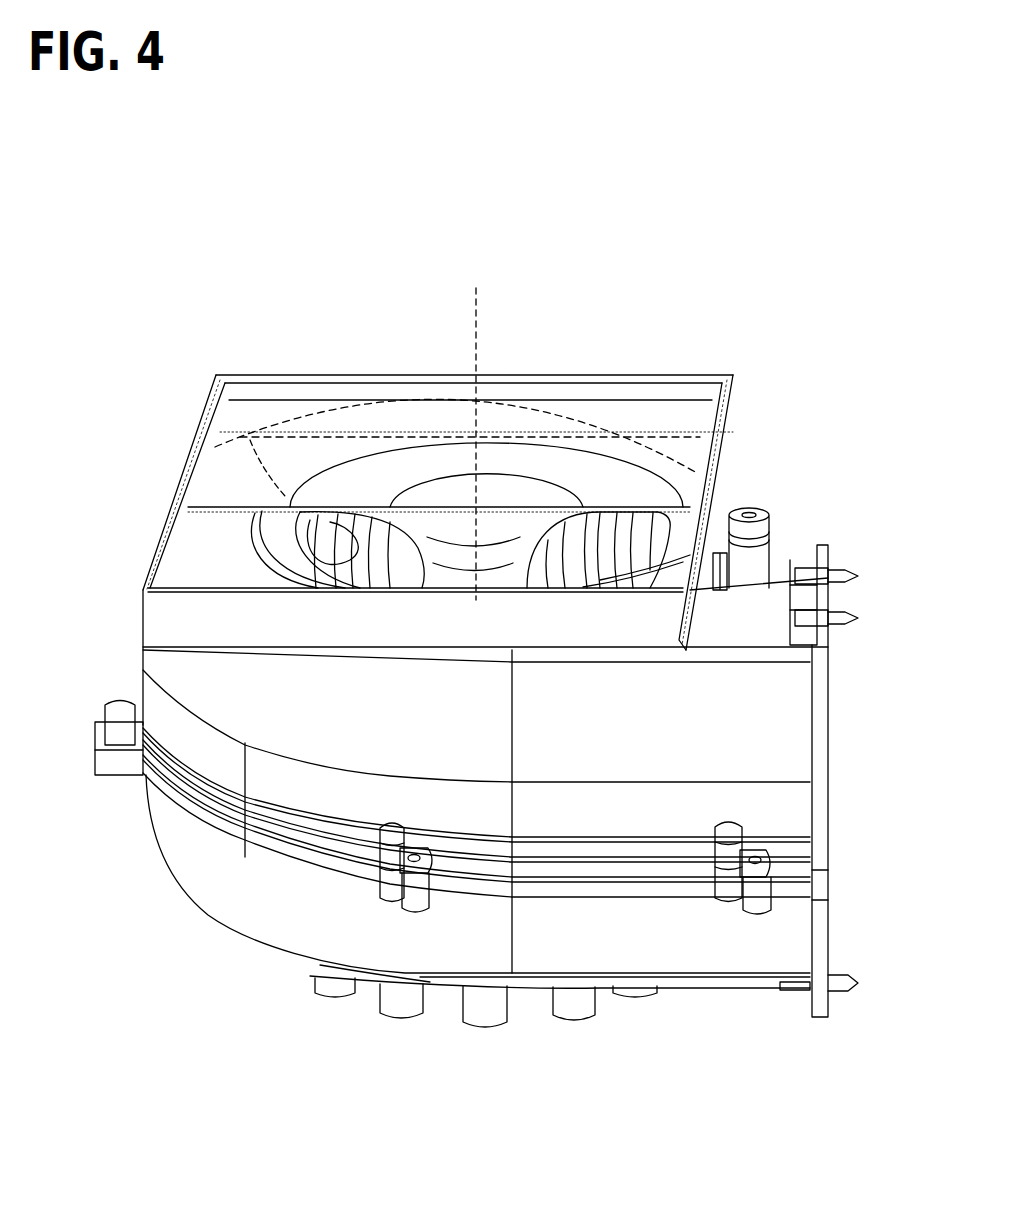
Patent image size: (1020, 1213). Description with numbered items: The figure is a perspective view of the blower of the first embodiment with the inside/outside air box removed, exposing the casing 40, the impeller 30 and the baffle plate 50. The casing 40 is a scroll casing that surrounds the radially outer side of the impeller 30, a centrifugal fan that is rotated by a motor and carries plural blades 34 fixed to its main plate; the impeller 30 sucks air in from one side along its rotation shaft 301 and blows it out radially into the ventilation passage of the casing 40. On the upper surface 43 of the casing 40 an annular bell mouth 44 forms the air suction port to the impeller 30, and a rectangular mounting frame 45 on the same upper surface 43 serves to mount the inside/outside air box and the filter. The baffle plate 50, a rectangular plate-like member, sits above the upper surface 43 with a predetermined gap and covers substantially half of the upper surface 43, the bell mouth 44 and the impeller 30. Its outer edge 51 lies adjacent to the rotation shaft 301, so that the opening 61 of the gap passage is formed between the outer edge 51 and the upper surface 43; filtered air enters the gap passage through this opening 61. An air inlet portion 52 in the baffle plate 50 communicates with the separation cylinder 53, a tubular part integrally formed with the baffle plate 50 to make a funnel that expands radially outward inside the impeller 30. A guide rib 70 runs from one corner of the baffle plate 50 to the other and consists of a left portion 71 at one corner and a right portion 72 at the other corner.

The rotation shaft 301 is at (478, 312).
The guide rib 70 is at (439, 470).
The left portion 71 is at (252, 383).
The right portion 72 is at (681, 405).
The air inlet portion 52 is at (415, 495).
The baffle plate 50 is at (376, 453).
The outer edge 51 is at (376, 520).
The separation cylinder 53 is at (355, 548).
The opening 61 is at (232, 524).
The bell mouth 44 is at (433, 553).
The upper surface 43 is at (205, 575).
The casing 40 is at (160, 710).
The mounting frame 45 is at (803, 762).
The impeller 30 is at (808, 749).
The blades 34 is at (700, 568).